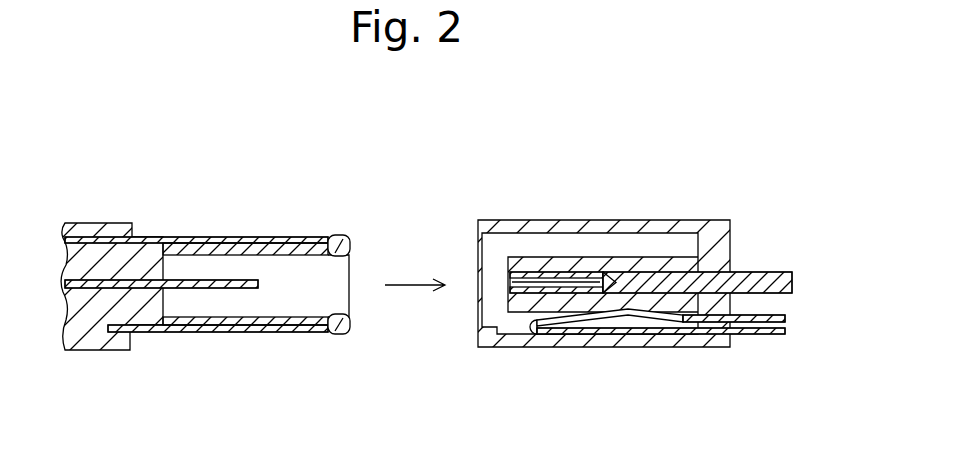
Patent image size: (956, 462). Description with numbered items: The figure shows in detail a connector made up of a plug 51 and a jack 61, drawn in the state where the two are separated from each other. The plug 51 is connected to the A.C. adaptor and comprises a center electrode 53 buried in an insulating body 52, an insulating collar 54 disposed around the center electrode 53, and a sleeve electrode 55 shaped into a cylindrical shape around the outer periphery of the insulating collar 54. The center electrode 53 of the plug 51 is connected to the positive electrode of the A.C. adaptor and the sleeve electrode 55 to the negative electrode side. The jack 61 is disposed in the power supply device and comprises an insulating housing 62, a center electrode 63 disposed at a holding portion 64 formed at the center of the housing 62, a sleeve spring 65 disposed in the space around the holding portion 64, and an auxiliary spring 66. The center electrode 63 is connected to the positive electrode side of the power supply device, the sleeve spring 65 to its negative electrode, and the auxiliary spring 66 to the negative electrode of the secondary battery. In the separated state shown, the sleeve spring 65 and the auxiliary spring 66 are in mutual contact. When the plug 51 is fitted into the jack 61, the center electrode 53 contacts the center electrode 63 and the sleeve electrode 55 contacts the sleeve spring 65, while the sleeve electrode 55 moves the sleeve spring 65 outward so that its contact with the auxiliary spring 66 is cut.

The plug 51 is at (209, 252).
The insulating body 52 is at (100, 222).
The center electrode 53 is at (240, 289).
The insulating collar 54 is at (275, 254).
The sleeve electrode 55 is at (183, 236).
The jack 61 is at (659, 261).
The insulating housing 62 is at (699, 220).
The center electrode 63 is at (753, 271).
The holding portion 64 is at (544, 256).
The sleeve spring 65 is at (685, 342).
The auxiliary spring 66 is at (765, 315).